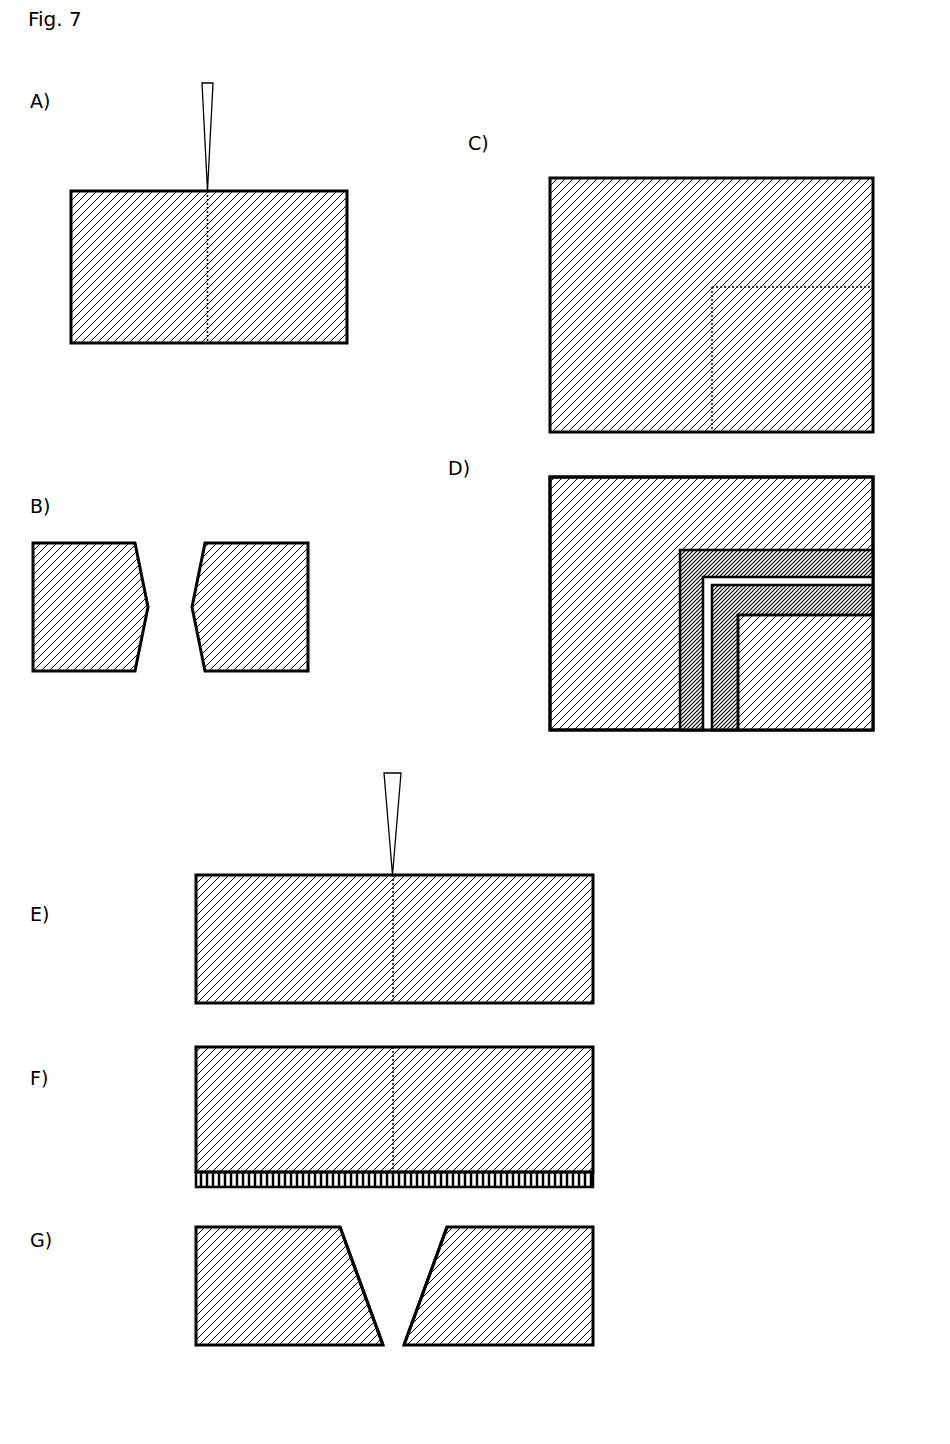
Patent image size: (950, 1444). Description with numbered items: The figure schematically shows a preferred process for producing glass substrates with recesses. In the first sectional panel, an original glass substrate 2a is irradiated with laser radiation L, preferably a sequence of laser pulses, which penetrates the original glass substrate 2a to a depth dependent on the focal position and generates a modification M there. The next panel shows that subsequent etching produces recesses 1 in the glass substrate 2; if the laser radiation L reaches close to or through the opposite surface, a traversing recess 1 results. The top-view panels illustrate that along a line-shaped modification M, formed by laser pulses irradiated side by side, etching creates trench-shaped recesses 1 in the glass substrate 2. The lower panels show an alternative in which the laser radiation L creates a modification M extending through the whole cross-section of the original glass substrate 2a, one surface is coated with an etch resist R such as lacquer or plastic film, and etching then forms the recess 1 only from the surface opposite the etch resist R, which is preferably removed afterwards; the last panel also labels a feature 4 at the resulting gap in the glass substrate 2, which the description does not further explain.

The original glass substrate 2a is at (350, 269).
The modification M is at (214, 216).
The laser radiation L is at (215, 123).
The glass substrate 2 is at (316, 605).
The recess 1 is at (174, 552).
The etch resist R is at (596, 1180).
The cut surface 4 is at (400, 1241).